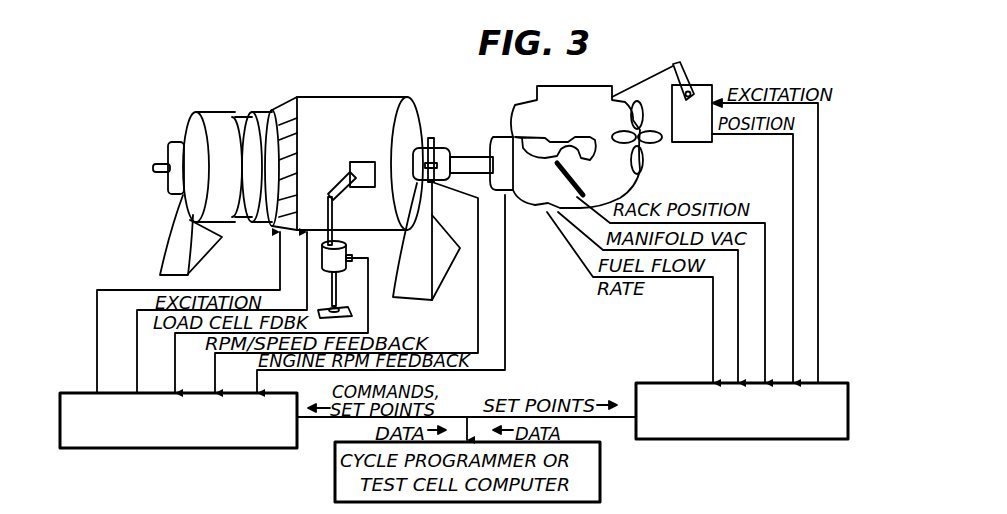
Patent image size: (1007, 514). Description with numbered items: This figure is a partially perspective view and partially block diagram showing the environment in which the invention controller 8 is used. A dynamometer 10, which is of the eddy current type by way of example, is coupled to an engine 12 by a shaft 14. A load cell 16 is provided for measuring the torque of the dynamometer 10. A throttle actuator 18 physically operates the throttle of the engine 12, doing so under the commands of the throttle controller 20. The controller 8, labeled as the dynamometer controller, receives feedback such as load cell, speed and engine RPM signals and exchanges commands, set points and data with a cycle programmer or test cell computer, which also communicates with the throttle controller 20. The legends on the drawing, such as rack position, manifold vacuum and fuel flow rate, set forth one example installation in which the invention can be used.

The controller 8 is at (185, 447).
The dynamometer 10 is at (205, 133).
The engine 12 is at (545, 202).
The shaft 14 is at (476, 160).
The load cell 16 is at (347, 248).
The throttle actuator 18 is at (703, 92).
The throttle controller 20 is at (795, 439).